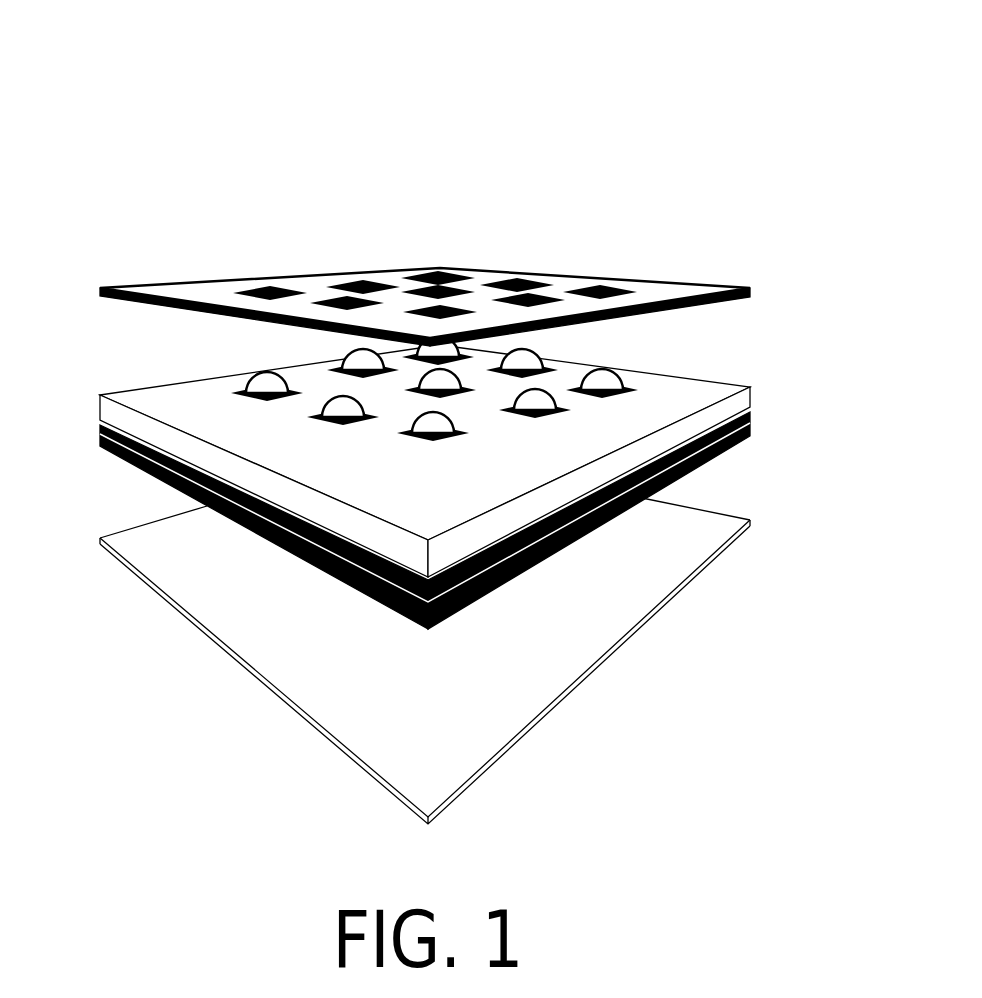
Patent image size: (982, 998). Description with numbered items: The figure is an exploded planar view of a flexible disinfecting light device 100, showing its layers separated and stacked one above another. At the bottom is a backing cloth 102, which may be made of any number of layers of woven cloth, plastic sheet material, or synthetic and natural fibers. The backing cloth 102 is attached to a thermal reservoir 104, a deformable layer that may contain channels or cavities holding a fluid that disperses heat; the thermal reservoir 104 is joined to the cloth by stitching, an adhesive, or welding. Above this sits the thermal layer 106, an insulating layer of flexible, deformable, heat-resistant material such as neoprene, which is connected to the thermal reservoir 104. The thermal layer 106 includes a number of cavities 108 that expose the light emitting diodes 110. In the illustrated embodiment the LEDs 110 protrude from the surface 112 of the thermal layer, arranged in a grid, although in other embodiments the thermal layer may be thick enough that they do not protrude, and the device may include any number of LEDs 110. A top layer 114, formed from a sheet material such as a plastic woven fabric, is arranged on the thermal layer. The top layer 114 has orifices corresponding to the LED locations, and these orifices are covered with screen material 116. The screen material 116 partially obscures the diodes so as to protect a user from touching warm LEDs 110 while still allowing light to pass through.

The flexible disinfecting light device 100 is at (106, 55).
The backing cloth 102 is at (113, 557).
The thermal reservoir 104 is at (638, 498).
The thermal layer 106 is at (114, 399).
The cavities 108 is at (618, 390).
The light emitting diodes 110 is at (440, 369).
The surface of the thermal layer 112 is at (707, 362).
The top layer 114 is at (732, 292).
The screen material 116 is at (602, 292).